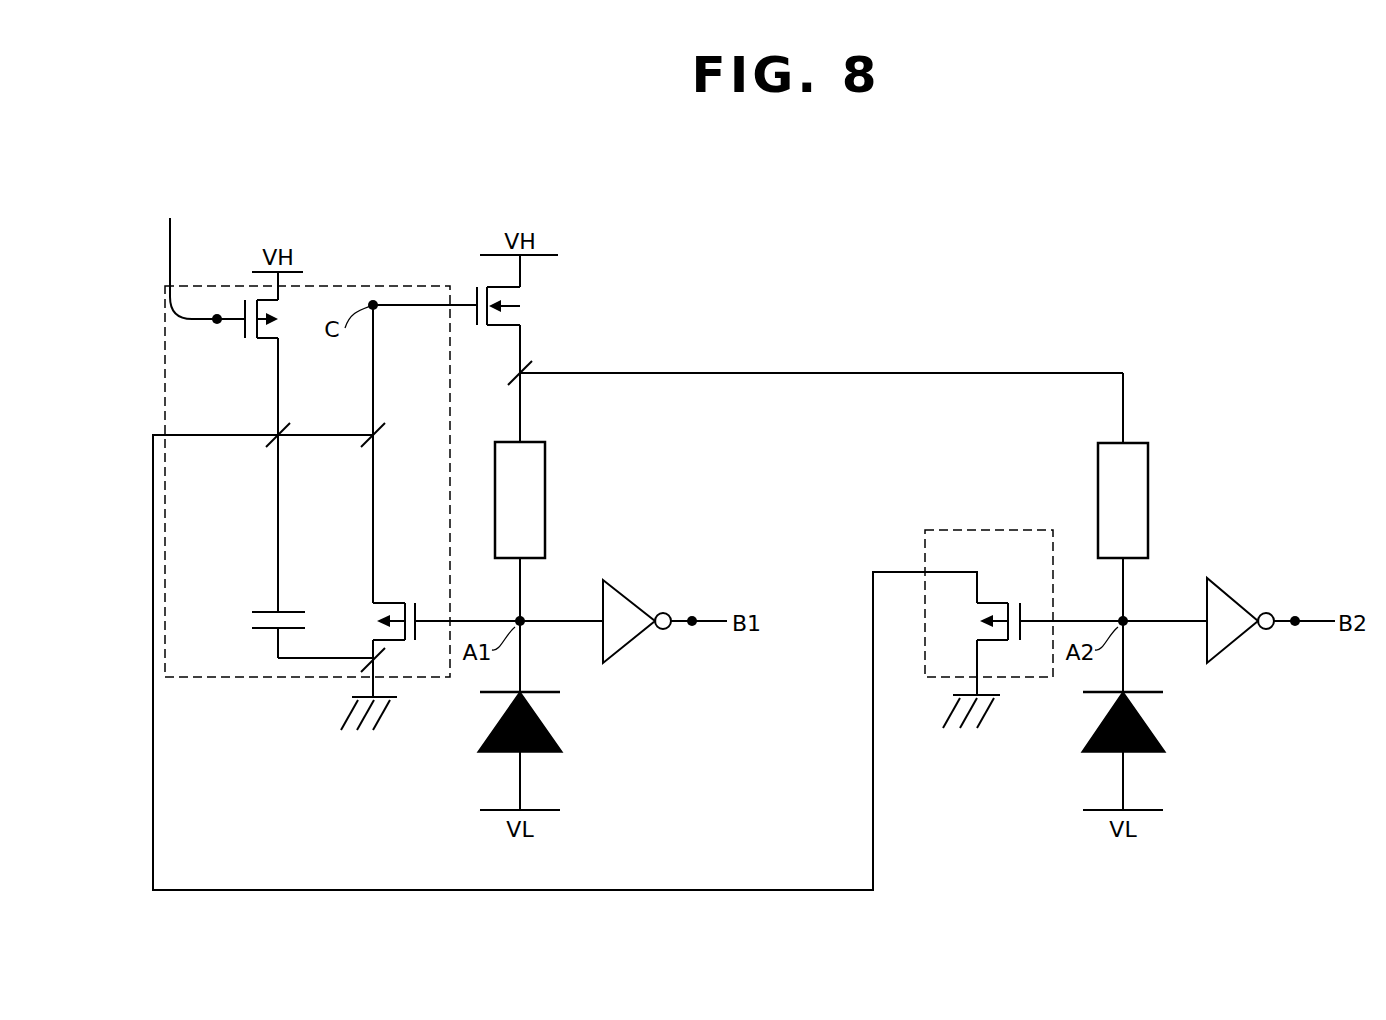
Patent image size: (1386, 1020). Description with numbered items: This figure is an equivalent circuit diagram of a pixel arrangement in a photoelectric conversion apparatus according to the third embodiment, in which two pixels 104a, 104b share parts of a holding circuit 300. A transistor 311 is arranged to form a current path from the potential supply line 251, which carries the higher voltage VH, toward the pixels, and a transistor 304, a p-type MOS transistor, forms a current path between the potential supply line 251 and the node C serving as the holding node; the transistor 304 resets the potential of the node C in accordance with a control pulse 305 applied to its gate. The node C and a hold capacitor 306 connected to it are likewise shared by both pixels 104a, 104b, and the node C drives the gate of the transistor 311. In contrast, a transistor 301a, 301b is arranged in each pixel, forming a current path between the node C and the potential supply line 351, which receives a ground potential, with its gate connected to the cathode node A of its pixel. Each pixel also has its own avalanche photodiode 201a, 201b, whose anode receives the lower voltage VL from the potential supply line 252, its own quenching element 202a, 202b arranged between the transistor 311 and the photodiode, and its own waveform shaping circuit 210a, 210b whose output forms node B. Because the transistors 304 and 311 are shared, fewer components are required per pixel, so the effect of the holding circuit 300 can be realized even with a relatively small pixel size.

The pixel 104a is at (568, 178).
The pixel 104b is at (1177, 179).
The control pulse 305 is at (191, 255).
The potential supply line 251 is at (258, 271).
The transistor 304 is at (242, 306).
The transistor 311 is at (473, 297).
The hold capacitor 306 is at (262, 610).
The transistor 301a is at (390, 603).
The transistor 301b is at (993, 603).
The potential supply line 351 is at (352, 697).
The holding circuit 300 is at (215, 679).
The quenching element 202a is at (545, 478).
The quenching element 202b is at (1148, 478).
The waveform shaping circuit 210a is at (633, 596).
The waveform shaping circuit 210b is at (1240, 596).
The avalanche photodiode 201a is at (490, 720).
The avalanche photodiode 201b is at (1093, 720).
The potential supply line 252 is at (549, 808).